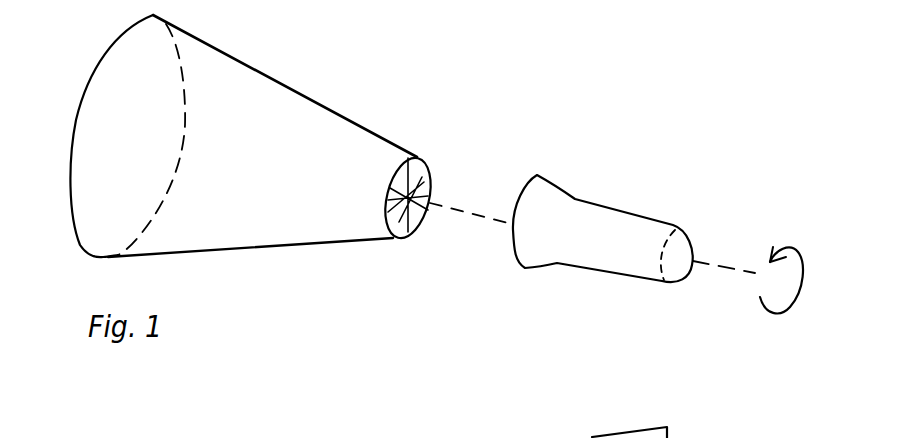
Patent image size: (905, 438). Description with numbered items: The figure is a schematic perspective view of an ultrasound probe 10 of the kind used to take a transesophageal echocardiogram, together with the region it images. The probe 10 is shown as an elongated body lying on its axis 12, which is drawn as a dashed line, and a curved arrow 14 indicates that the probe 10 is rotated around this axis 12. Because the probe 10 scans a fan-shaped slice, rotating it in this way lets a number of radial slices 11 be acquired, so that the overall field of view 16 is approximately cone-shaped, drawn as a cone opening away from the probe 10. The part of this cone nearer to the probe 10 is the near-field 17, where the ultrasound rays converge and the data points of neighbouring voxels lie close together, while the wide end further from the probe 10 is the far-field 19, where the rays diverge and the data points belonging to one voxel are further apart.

The ultrasound probe 10 is at (620, 210).
The radial slices 11 is at (427, 183).
The axis 12 is at (465, 216).
The arrow 14 is at (803, 263).
The field of view 16 is at (315, 98).
The near-field 17 is at (363, 230).
The far-field 19 is at (88, 225).